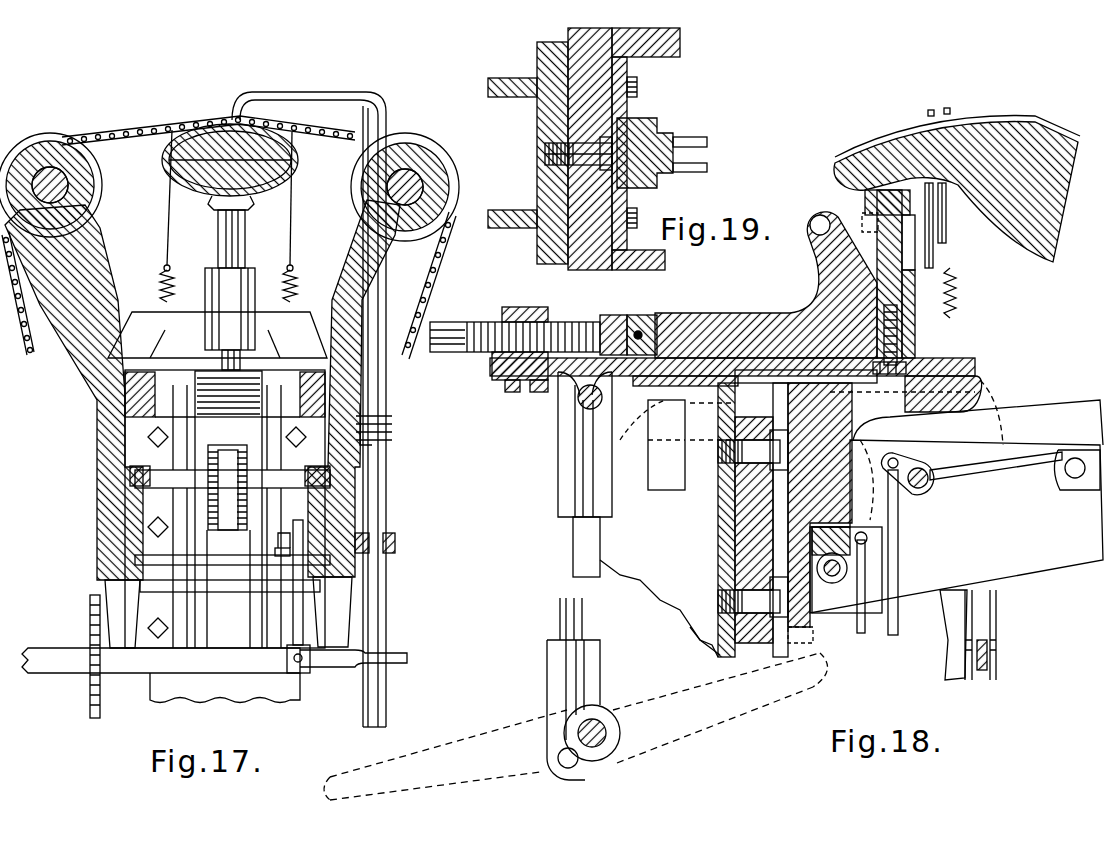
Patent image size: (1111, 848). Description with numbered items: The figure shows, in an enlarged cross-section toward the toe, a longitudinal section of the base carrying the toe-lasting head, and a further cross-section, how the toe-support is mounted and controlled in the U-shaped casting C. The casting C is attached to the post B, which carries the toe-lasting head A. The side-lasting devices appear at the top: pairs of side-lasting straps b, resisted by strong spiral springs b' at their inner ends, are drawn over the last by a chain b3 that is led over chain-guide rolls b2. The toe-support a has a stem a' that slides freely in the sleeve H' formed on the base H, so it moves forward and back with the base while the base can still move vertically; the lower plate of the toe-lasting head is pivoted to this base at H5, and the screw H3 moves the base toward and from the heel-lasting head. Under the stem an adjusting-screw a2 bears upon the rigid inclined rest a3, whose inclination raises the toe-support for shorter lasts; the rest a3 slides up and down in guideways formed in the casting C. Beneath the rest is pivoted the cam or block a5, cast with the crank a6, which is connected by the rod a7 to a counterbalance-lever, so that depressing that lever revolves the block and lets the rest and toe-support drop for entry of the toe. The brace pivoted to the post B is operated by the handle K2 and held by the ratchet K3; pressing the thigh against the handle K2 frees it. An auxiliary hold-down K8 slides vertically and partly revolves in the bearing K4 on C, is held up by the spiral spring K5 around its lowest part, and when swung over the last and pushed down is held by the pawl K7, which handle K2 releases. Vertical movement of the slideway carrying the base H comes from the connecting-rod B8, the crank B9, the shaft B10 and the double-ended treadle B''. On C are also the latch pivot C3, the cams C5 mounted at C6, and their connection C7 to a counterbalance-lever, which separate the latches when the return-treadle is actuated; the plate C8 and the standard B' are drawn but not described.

In FIG. 17, the U-shaped casting C is at (130, 270).
In FIG. 19, the U-shaped casting C is at (624, 137).
In FIG. 17, the chain b3 is at (230, 230).
In FIG. 17, the chain-guide rolls b2 is at (98, 193).
In FIG. 17, the toe-support a is at (230, 168).
In FIG. 18, the toe-support a is at (878, 274).
In FIG. 17, the stem of the toe-support a' is at (243, 239).
In FIG. 18, the stem of the toe-support a' is at (911, 286).
In FIG. 17, the side-lasting straps b is at (238, 200).
In FIG. 17, the spiral springs b' is at (238, 286).
In FIG. 17, the base H is at (217, 313).
In FIG. 18, the base H is at (766, 285).
In FIG. 17, the adjusting-screw a2 is at (242, 360).
In FIG. 18, the adjusting-screw a2 is at (910, 362).
In FIG. 17, the inclined rest a3 is at (227, 509).
In FIG. 19, the inclined rest a3 is at (640, 128).
In FIG. 18, the inclined rest a3 is at (985, 392).
In FIG. 17, the cam or block a5 is at (227, 498).
In FIG. 17, the crank a6 is at (284, 532).
In FIG. 18, the crank a6 is at (868, 540).
In FIG. 17, the rod a7 is at (300, 605).
In FIG. 18, the rod a7 is at (866, 580).
In FIG. 17, the post B is at (161, 675).
In FIG. 18, the post B is at (646, 513).
In FIG. 17, the handle K2 is at (408, 658).
In FIG. 18, the handle K2 is at (998, 652).
In FIG. 17, the ratchet K3 is at (100, 690).
In FIG. 17, the auxiliary hold-down K8 is at (325, 95).
In FIG. 17, the spiral spring K5 is at (394, 424).
In FIG. 17, the bearing K4 is at (398, 542).
In FIG. 19, the toe-lasting head A is at (538, 64).
In FIG. 18, the pivot H5 is at (822, 198).
In FIG. 18, the sleeve H' is at (934, 262).
In FIG. 18, the screw H3 is at (492, 352).
In FIG. 18, the standard B' is at (779, 513).
In FIG. 18, the connecting-rod B8 is at (555, 619).
In FIG. 18, the crank B9 is at (560, 745).
In FIG. 18, the shaft B10 is at (608, 733).
In FIG. 18, the double-ended treadle B'' is at (576, 726).
In FIG. 18, the plate C8 is at (956, 496).
In FIG. 18, the cam mounting C6 is at (922, 470).
In FIG. 18, the cams C5 is at (960, 478).
In FIG. 18, the latch pivot C3 is at (1075, 480).
In FIG. 18, the cam connection C7 is at (906, 552).
In FIG. 18, the pawl K7 is at (940, 657).